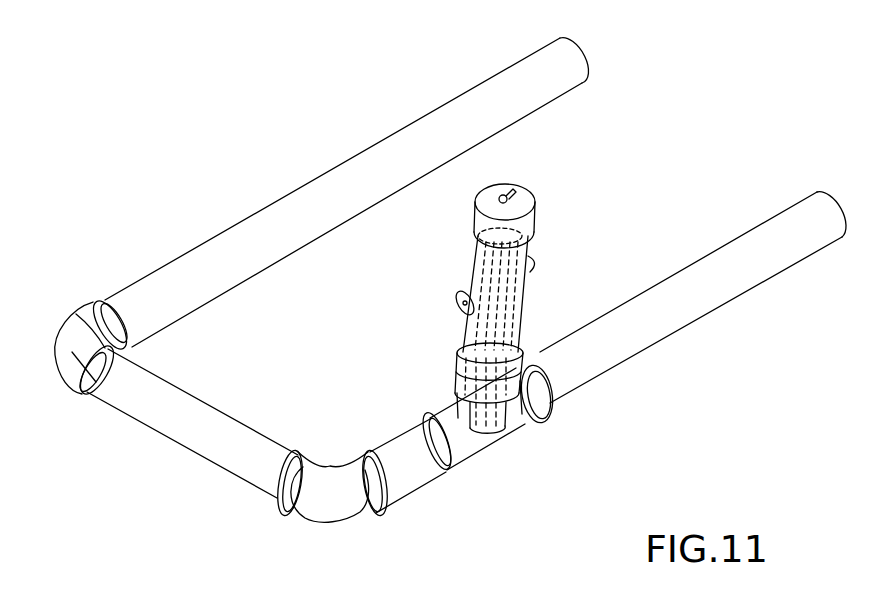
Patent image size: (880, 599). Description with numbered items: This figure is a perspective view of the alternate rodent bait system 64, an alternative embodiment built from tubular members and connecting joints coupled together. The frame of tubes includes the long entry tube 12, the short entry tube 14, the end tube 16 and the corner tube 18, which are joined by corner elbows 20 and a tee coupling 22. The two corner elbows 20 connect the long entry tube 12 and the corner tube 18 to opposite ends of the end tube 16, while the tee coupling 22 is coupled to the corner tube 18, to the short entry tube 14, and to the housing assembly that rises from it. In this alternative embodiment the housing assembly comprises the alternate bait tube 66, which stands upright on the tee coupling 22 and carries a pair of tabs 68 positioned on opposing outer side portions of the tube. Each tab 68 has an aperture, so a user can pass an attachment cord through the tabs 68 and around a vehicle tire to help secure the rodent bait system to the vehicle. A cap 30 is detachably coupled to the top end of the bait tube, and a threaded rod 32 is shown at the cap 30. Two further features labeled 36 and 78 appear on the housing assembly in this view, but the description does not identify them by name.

The long entry tube 12 is at (422, 126).
The short entry tube 14 is at (770, 270).
The end tube 16 is at (188, 404).
The corner tube 18 is at (408, 478).
The corner elbows 20 is at (78, 385).
The tee coupling 22 is at (483, 443).
The cap 30 is at (535, 220).
The threaded rod 32 is at (511, 190).
The valve base 36 is at (497, 201).
The alternate rodent bait system 64 is at (224, 188).
The alternate bait tube 66 is at (480, 258).
The tabs 68 is at (458, 302).
The collar 78 is at (520, 333).